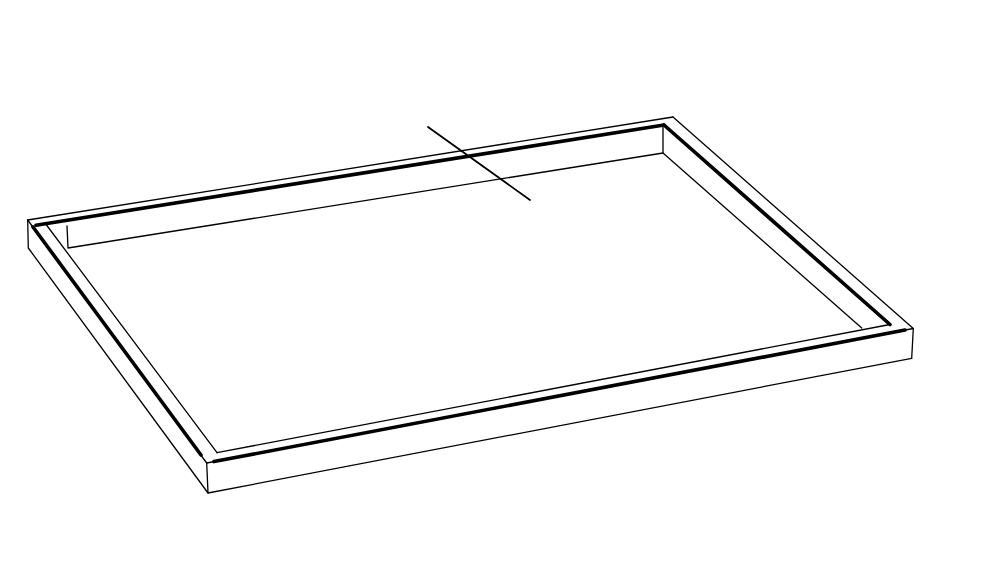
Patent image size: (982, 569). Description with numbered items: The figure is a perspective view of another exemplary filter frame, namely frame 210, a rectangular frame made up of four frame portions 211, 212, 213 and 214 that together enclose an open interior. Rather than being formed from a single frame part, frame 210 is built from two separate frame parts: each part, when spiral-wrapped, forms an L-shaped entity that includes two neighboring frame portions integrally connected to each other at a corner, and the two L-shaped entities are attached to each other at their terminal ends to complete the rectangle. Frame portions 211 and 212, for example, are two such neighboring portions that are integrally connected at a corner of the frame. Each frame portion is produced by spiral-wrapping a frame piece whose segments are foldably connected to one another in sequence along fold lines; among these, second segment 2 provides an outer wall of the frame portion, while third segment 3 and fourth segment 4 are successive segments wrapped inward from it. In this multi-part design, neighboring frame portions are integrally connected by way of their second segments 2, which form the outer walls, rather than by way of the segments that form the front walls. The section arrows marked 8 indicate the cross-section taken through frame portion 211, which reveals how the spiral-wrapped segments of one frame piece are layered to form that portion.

The second segment 2 is at (314, 462).
The third segment 3 is at (108, 317).
The fourth segment 4 is at (262, 205).
The cross-sectional view of a frame portion 8 is at (456, 127).
The frame 210 is at (719, 80).
The frame portion 211 is at (177, 219).
The frame portion 212 is at (770, 213).
The frame portion 213 is at (628, 405).
The frame portion 214 is at (123, 366).